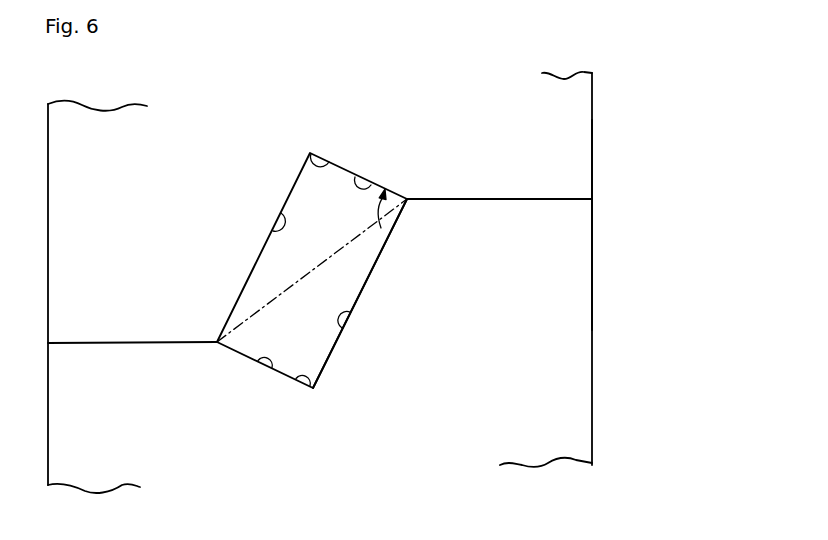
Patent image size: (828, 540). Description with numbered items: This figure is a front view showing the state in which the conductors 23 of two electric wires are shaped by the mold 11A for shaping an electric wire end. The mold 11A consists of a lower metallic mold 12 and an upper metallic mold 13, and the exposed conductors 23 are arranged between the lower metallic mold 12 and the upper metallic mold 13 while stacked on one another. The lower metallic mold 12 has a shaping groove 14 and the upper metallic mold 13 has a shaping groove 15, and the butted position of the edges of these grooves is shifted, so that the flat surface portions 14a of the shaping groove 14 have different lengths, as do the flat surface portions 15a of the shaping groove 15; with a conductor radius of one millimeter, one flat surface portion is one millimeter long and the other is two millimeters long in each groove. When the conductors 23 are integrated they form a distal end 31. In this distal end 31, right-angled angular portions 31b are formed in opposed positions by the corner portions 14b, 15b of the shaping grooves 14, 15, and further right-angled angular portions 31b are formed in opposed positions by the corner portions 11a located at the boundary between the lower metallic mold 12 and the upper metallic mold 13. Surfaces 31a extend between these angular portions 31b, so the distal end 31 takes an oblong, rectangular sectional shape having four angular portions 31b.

The mold for shaping electric wire end 11A is at (671, 155).
The upper metallic mold 13 is at (584, 167).
The lower metallic mold 12 is at (586, 278).
The conductor 23 is at (300, 193).
The corner portion 11a is at (225, 322).
The distal end 31 is at (331, 363).
The surface 31a is at (302, 175).
The right-angled angular portion 31b is at (310, 152).
The flat surface portion 15a is at (287, 226).
The corner portion 15b is at (332, 156).
The shaping groove 15 is at (392, 230).
The shaping groove 14 is at (240, 345).
The flat surface portion 14a is at (259, 366).
The corner portion 14b is at (298, 386).